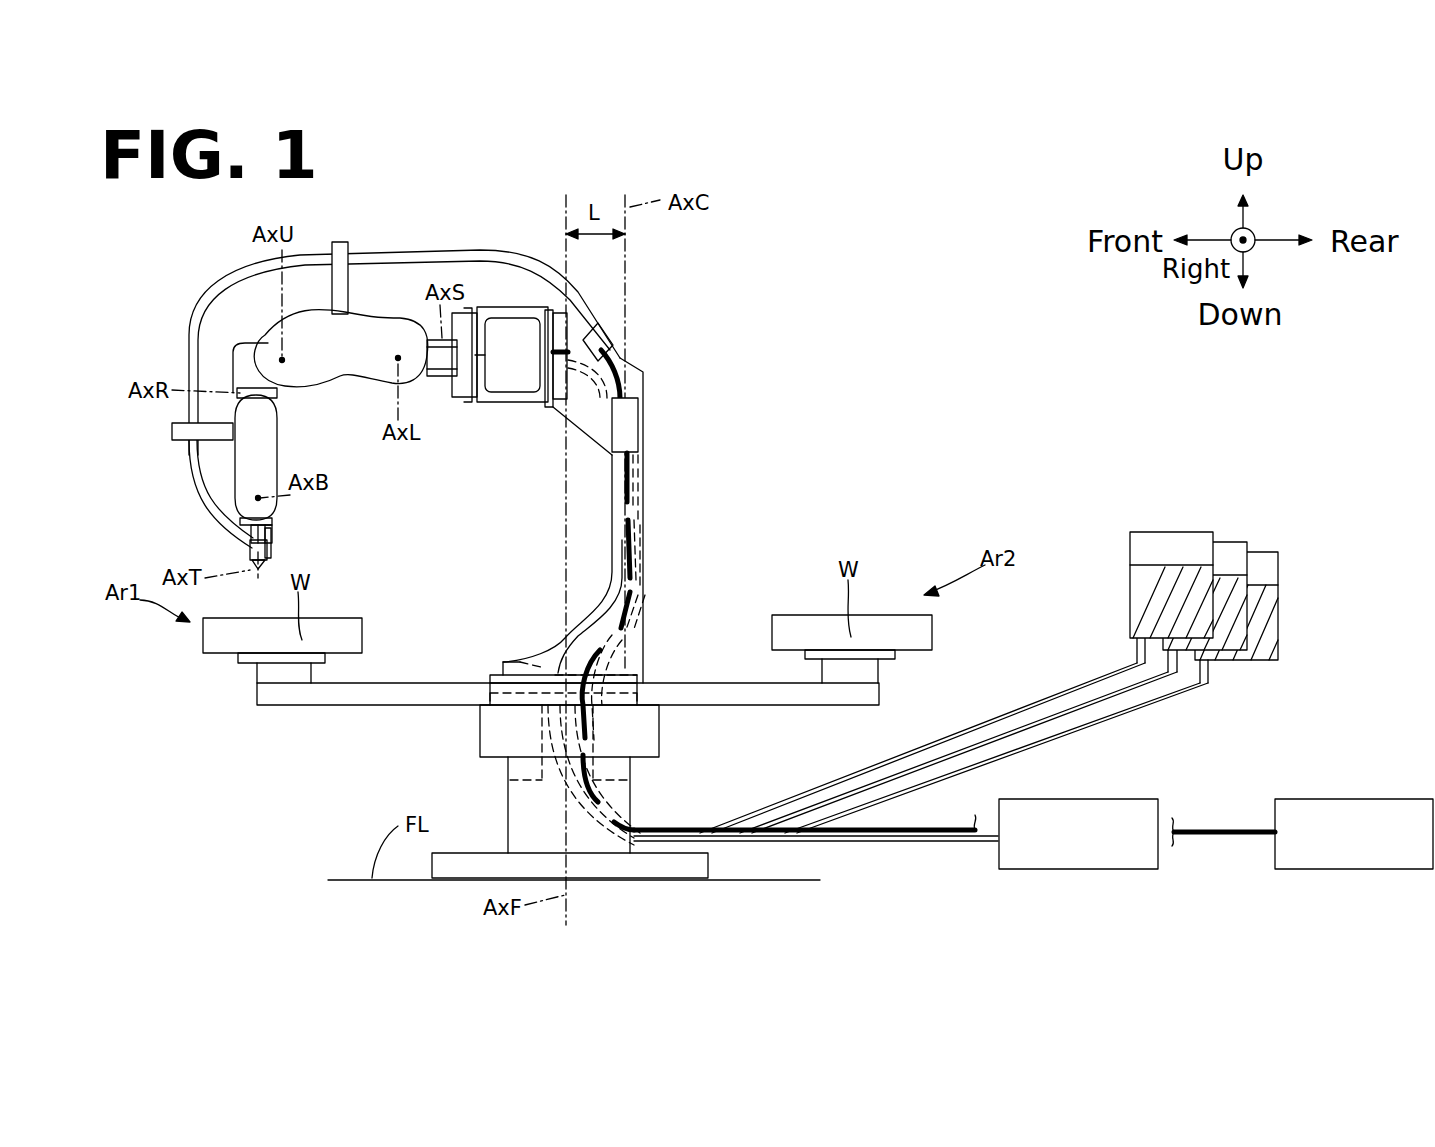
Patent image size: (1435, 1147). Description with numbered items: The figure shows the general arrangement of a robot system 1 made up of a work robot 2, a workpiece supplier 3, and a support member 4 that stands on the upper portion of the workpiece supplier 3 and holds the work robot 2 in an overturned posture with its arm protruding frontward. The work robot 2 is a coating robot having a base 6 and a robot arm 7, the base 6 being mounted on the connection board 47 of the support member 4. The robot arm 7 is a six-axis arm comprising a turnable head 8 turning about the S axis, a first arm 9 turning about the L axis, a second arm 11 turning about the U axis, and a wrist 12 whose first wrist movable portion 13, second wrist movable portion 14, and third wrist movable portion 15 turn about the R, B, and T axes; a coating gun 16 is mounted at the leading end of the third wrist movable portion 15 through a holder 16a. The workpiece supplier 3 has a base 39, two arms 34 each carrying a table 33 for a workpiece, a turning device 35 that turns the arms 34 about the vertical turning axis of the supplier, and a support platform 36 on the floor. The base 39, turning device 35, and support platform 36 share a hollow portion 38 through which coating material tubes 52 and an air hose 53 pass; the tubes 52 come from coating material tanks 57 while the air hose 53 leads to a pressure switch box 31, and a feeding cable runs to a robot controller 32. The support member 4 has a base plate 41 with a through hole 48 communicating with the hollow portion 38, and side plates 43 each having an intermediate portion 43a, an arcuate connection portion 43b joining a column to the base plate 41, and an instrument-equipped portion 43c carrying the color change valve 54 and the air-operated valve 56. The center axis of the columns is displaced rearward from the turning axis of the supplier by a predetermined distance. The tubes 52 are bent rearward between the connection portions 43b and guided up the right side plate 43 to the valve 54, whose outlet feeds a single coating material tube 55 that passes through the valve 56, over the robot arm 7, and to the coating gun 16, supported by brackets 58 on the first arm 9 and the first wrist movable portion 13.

The robot system 1 is at (804, 252).
The work robot 2 is at (157, 276).
The workpiece supplier 3 is at (823, 725).
The support member 4 is at (644, 452).
The base 6 is at (510, 396).
The robot arm 7 is at (323, 406).
The turnable head 8 is at (458, 383).
The first arm 9 is at (347, 368).
The second arm 11 is at (245, 345).
The wrist 12 is at (232, 470).
The first wrist movable portion 13 is at (275, 436).
The second wrist movable portion 14 is at (272, 518).
The third wrist movable portion 15 is at (275, 535).
The coating gun 16 is at (250, 560).
The holder 16a is at (272, 550).
The pressure switch box 31 is at (1068, 798).
The robot controller 32 is at (1348, 798).
The table 33 is at (245, 660).
The arms 34 is at (378, 702).
The turning device 35 is at (660, 732).
The support platform 36 is at (510, 805).
The hollow portion 38 is at (500, 762).
The base 39 is at (508, 722).
The base plate 41 is at (494, 676).
The side plates 43 is at (645, 547).
The intermediate portion 43a is at (644, 487).
The connection portion 43b is at (640, 645).
The instrument-equipped portion 43c is at (630, 367).
The connection board 47 is at (553, 410).
The through hole 48 is at (518, 668).
The coating material tubes 52 is at (606, 578).
The air hose 53 is at (648, 577).
The color change valve (CCV) 54 is at (640, 412).
The coating material tube 55 is at (450, 252).
The air-operated valve (AOPR) 56 is at (597, 335).
The coating material tank 57 is at (1262, 552).
The brackets 58 is at (340, 242).